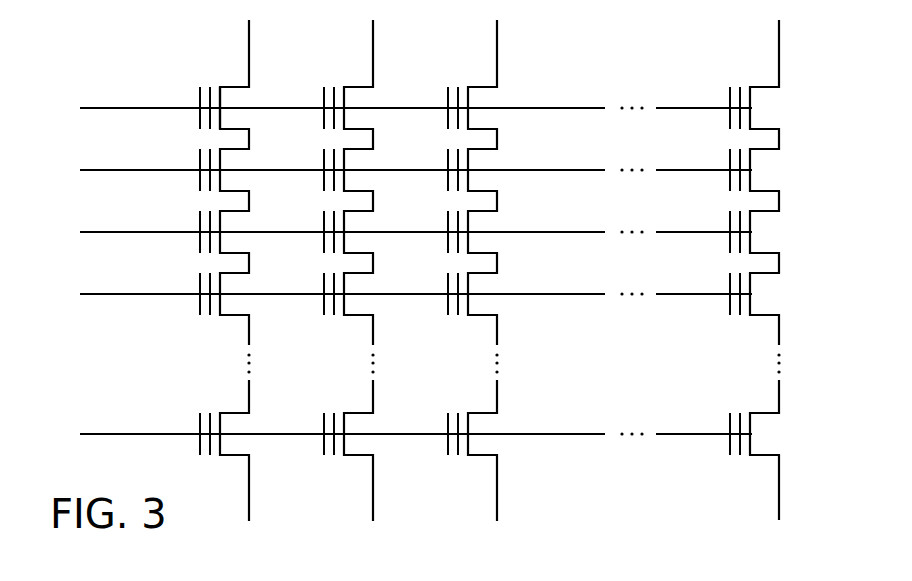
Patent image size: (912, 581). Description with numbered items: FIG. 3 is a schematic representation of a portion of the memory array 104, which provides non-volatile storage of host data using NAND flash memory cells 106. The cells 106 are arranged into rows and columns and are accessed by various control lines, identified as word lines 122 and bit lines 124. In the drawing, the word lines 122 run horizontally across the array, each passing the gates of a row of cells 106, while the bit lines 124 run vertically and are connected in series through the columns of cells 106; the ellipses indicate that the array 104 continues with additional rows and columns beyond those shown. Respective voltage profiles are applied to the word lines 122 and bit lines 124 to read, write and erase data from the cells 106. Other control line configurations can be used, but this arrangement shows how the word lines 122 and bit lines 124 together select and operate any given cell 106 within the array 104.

The memory array 104 is at (134, 68).
The memory cell 106 is at (222, 118).
The word line 122 is at (176, 110).
The bit line 124 is at (247, 81).